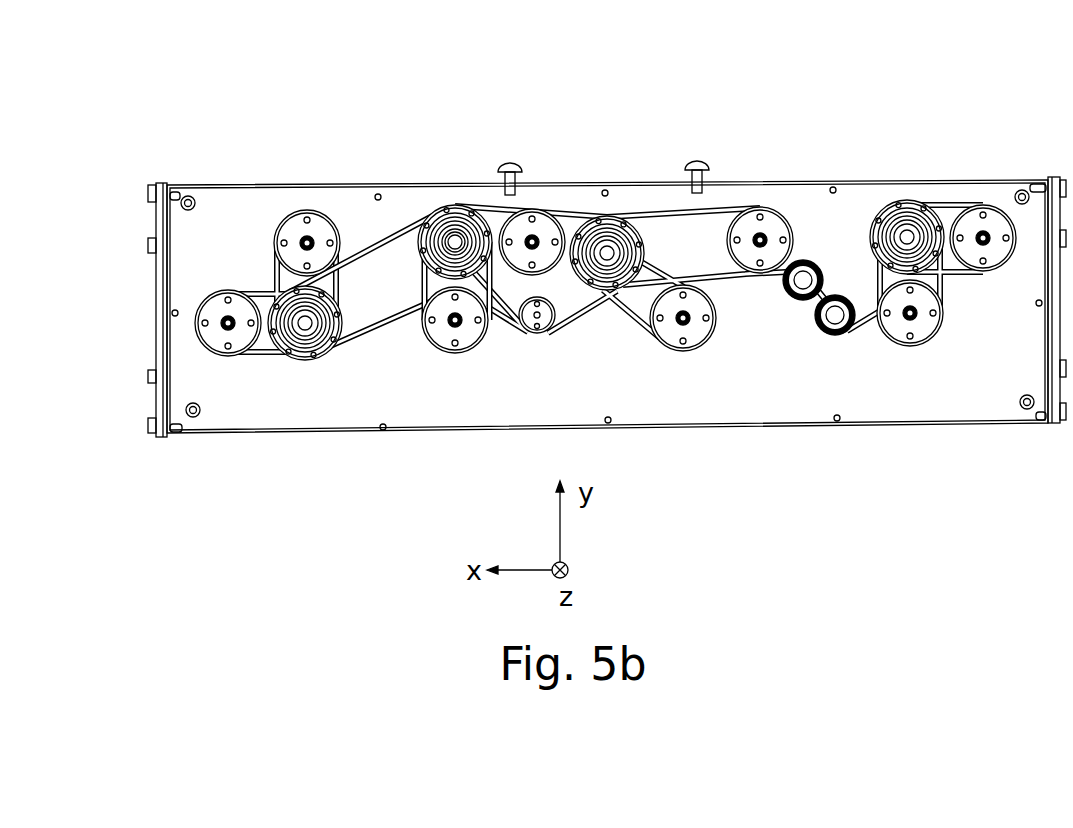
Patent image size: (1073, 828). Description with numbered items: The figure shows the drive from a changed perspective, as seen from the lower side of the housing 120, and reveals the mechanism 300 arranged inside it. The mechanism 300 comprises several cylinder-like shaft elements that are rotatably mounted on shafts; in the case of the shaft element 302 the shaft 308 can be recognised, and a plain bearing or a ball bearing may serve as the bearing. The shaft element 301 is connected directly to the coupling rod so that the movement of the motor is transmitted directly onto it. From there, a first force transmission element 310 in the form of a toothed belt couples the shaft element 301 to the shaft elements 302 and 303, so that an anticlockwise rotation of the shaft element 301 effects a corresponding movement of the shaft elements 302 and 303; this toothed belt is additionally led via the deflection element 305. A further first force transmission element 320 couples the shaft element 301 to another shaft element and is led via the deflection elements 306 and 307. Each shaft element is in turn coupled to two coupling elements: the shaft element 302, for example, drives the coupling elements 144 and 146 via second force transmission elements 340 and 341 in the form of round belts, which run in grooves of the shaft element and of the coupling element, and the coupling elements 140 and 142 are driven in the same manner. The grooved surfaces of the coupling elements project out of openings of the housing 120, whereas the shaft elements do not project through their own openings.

The mechanism 300 is at (514, 138).
The coupling element 140 is at (296, 233).
The shaft element 302 is at (440, 222).
The shaft 308 is at (445, 222).
The coupling element 144 is at (533, 230).
The shaft element 301 is at (605, 235).
The further first force transmission element 320 is at (663, 210).
The housing 120 is at (903, 220).
The second force transmission element 341 is at (422, 278).
The first force transmission element 310 is at (380, 338).
The second force transmission element 340 is at (500, 273).
The deflection element 305 is at (528, 322).
The deflection element 306 is at (792, 289).
The deflection element 307 is at (825, 325).
The coupling element 142 is at (223, 340).
The shaft element 303 is at (300, 350).
The coupling element 146 is at (450, 335).